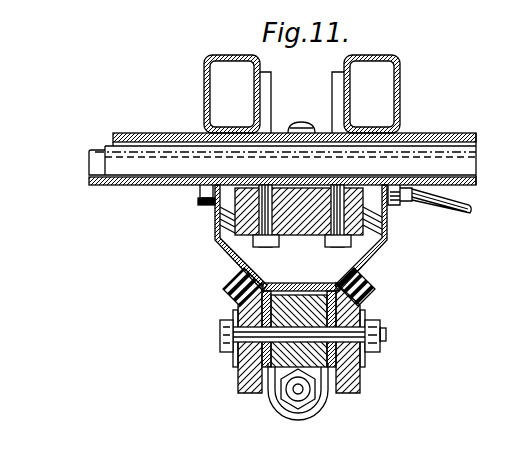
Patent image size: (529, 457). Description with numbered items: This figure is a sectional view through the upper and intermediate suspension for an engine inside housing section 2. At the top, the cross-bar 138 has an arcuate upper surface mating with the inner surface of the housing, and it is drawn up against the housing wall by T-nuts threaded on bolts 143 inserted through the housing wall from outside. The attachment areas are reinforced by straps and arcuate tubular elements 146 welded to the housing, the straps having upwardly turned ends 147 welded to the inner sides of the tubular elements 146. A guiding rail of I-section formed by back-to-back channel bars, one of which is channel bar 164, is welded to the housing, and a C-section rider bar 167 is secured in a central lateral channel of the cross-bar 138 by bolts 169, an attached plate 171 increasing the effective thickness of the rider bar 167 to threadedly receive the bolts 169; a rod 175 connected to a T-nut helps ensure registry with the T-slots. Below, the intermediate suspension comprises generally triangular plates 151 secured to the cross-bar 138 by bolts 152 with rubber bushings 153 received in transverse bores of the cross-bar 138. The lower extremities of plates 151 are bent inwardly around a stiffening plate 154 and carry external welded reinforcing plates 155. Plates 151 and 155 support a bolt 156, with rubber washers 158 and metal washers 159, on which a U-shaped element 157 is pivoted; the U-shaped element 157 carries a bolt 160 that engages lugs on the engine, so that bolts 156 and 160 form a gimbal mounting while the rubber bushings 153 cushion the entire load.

The housing section 2 is at (438, 131).
The cross-bar 138 is at (215, 246).
The bolt 143 is at (298, 124).
The arcuate tubular element 146 is at (219, 56).
The upwardly turned end 147 is at (268, 85).
The plate 151 is at (215, 229).
The bolt 152 is at (200, 196).
The rubber bushing 153 is at (222, 214).
The stiffening plate 154 is at (353, 268).
The reinforcing plate 155 is at (232, 275).
The bolt 156 is at (226, 336).
The U-shaped element 157 is at (328, 402).
The rubber washer 158 is at (360, 378).
The metal washer 159 is at (365, 311).
The bolt 160 is at (295, 394).
The channel bar 164 is at (476, 163).
The rider bar 167 is at (92, 164).
The bolt 169 is at (274, 224).
The attached plate 171 is at (327, 186).
The rod 175 is at (466, 214).